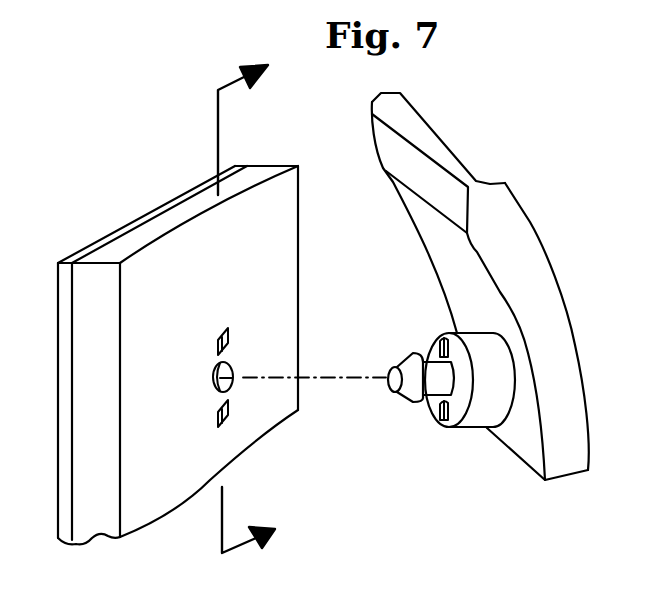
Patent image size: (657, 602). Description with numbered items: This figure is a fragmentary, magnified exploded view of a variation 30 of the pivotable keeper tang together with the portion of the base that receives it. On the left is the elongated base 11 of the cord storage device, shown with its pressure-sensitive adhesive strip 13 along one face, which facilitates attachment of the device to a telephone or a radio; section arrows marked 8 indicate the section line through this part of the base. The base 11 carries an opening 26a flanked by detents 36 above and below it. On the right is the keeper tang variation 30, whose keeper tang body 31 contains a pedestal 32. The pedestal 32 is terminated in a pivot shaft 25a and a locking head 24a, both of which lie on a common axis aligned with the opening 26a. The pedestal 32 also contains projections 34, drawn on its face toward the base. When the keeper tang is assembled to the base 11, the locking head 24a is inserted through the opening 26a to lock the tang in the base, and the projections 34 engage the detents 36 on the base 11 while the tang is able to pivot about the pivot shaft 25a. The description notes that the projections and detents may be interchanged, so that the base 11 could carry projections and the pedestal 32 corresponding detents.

The section line 8- 8 is at (229, 319).
The elongated base 11 is at (150, 268).
The pressure-sensitive adhesive strip 13 is at (85, 248).
The locking head 24a is at (412, 388).
The pivot shaft 25a is at (440, 370).
The opening 26a is at (232, 384).
The variation of the pivotable keeper tang 30 is at (479, 321).
The keeper tang body 31 is at (522, 283).
The pedestal 32 is at (477, 408).
The projections 34 is at (443, 337).
The detents 36 is at (228, 330).